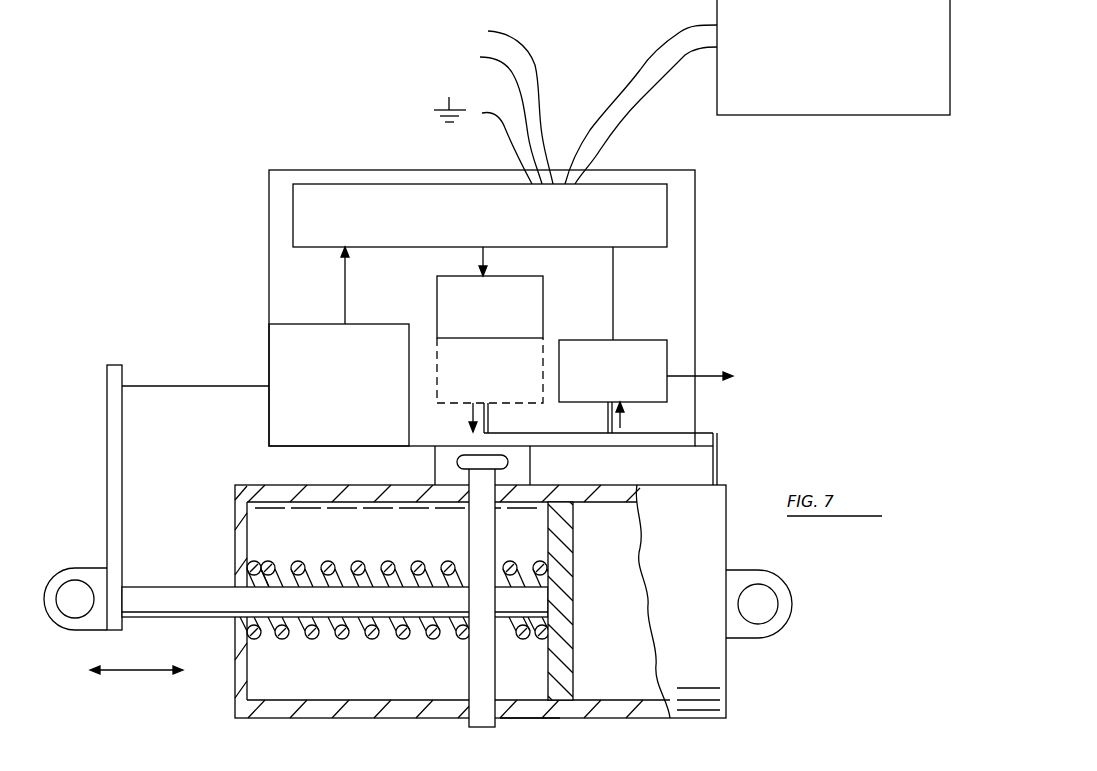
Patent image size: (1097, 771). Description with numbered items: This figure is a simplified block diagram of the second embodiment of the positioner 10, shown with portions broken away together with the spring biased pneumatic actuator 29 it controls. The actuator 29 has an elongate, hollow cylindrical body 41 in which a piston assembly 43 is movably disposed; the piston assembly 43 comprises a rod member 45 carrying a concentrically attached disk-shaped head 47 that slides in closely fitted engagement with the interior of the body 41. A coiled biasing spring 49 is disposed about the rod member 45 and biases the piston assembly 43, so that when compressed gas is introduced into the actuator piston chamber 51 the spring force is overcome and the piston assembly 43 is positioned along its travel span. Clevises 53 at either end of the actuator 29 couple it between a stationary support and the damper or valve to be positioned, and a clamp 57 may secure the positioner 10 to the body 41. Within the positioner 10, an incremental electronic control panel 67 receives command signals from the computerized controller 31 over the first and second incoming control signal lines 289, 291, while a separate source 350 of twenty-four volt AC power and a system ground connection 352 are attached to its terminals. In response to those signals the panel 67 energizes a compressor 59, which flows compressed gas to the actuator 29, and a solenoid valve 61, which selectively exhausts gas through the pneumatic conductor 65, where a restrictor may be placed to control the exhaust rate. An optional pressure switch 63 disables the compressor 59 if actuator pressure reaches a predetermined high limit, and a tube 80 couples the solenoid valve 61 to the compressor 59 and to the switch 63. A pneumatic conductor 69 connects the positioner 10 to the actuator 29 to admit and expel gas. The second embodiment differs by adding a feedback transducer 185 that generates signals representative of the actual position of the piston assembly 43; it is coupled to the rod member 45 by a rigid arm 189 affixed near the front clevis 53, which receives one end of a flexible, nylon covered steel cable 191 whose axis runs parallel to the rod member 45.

The positioner 10 is at (712, 274).
The spring biased pneumatic actuator 29 is at (396, 751).
The computerized controller 31 is at (828, 52).
The cylindrical body 41 is at (538, 716).
The piston assembly 43 is at (397, 622).
The rod member 45 is at (210, 617).
The disk-shaped head 47 is at (568, 600).
The coiled biasing spring 49 is at (322, 643).
The actuator piston chamber 51 is at (630, 667).
The clevis 53 is at (87, 630).
The clamp 57 is at (478, 728).
The compressor 59 is at (502, 321).
The solenoid valve 61 is at (620, 384).
The pressure switch 63 is at (502, 383).
The pneumatic conductor 65 is at (608, 413).
The electronic control panel 67 is at (496, 226).
The pneumatic conductor 69 is at (717, 433).
The tube 80 is at (568, 432).
The feedback transducer 185 is at (356, 406).
The rigid arm 189 is at (118, 507).
The flexible cable 191 is at (209, 385).
The first incoming control signal line 289 is at (655, 45).
The second incoming control signal line 291 is at (662, 72).
The source of 24VAC power 350 is at (497, 42).
The system ground connection 352 is at (490, 115).